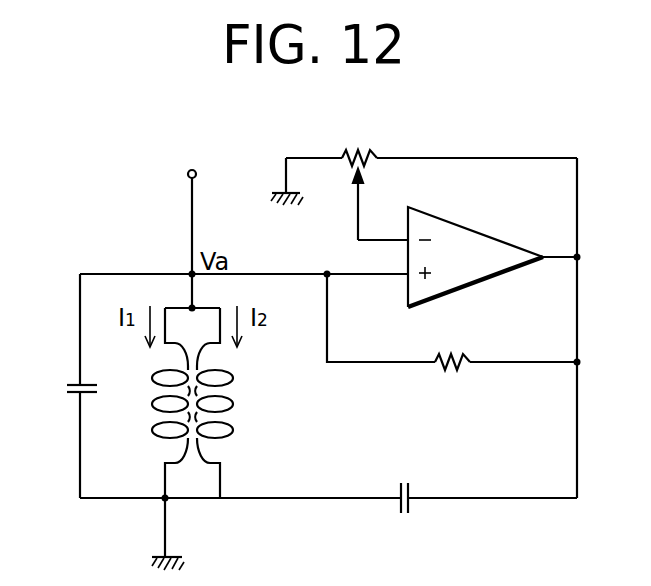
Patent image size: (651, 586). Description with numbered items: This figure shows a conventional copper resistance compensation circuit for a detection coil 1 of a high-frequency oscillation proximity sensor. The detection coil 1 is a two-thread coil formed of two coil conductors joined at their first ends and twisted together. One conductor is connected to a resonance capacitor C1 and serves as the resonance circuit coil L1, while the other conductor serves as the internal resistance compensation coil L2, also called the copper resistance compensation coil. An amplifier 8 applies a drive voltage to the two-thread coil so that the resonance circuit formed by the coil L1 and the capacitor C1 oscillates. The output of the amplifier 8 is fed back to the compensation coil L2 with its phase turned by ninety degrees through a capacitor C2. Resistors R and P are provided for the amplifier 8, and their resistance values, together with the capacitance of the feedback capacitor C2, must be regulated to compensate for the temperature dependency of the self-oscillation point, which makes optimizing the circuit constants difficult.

The detection coil 1 is at (236, 403).
The amplifier 8 is at (463, 265).
The resistor P is at (375, 180).
The resistor R is at (452, 380).
The resonance capacitor C1 is at (62, 389).
The capacitor C2 is at (401, 477).
The resonance circuit coil L1 is at (151, 403).
The internal resistance compensation coil L2 is at (232, 403).